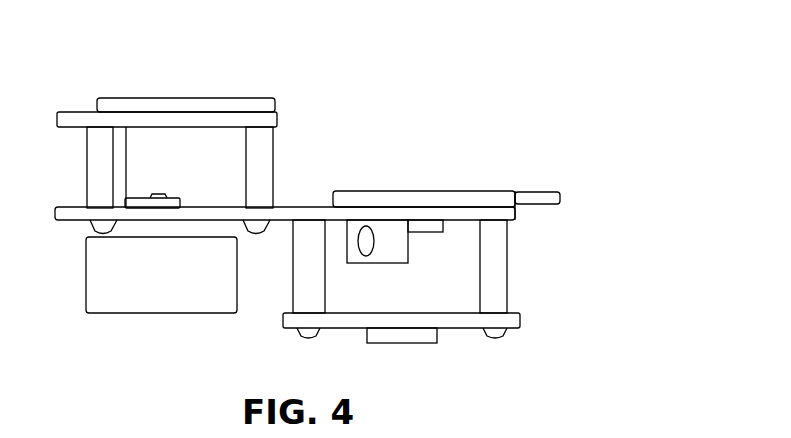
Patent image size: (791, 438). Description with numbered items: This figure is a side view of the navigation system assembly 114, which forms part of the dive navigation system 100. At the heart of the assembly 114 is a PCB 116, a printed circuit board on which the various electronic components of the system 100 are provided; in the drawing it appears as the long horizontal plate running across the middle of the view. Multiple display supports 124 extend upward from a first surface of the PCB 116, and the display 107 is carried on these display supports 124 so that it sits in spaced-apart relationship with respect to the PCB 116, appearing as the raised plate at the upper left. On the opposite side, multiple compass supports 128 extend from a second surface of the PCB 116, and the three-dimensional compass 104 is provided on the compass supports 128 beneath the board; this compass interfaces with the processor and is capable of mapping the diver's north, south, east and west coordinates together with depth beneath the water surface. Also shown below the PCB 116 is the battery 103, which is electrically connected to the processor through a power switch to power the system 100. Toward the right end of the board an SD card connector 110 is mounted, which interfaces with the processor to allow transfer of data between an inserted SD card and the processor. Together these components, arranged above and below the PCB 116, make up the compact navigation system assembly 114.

The system 100 is at (376, 124).
The battery 103 is at (158, 293).
The three-dimensional compass 104 is at (524, 320).
The display 107 is at (197, 92).
The SD card connector 110 is at (561, 197).
The navigation system assembly 114 is at (526, 152).
The PCB 116 is at (519, 220).
The display supports 124 is at (241, 194).
The compass supports 128 is at (477, 273).